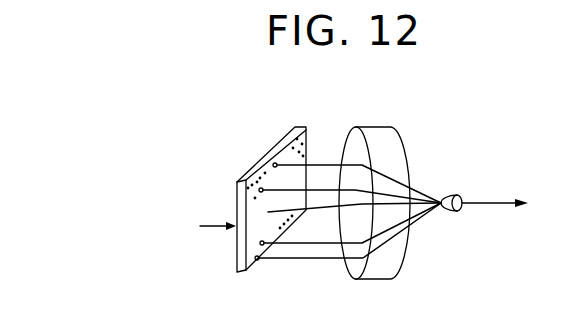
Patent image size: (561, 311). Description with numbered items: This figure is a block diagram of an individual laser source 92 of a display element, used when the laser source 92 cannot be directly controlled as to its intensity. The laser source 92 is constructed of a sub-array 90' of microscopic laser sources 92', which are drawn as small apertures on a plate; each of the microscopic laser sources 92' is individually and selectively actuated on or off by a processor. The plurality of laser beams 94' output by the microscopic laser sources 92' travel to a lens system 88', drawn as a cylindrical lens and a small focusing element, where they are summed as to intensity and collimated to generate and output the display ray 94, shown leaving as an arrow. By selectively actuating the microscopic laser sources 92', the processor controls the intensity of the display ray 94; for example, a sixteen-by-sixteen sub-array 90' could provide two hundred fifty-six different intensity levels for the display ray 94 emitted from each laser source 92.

The laser source 92 is at (246, 153).
The sub-array 90' is at (261, 199).
The microscopic laser sources 92' is at (246, 181).
The laser beams 94' is at (369, 179).
The lens system 88' is at (450, 151).
The display ray 94 is at (495, 233).